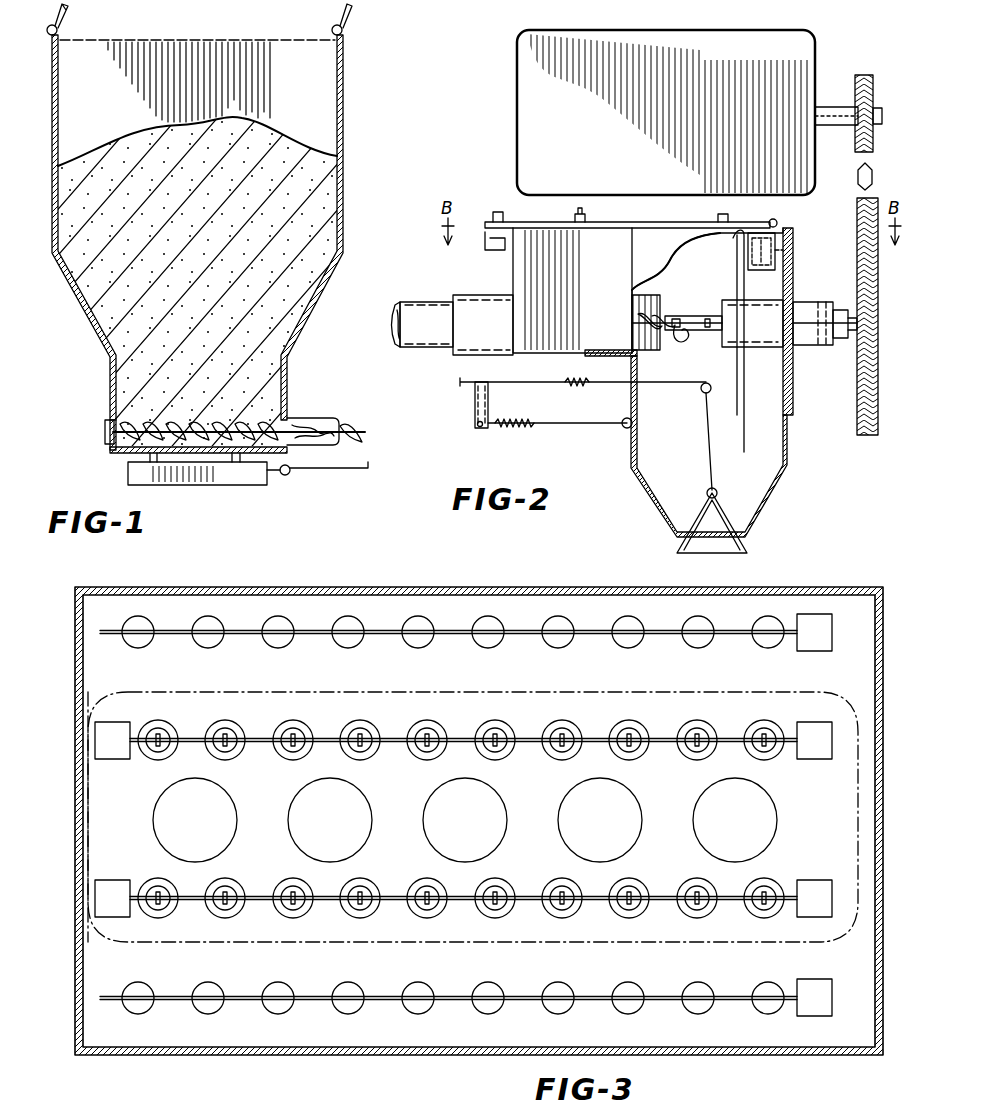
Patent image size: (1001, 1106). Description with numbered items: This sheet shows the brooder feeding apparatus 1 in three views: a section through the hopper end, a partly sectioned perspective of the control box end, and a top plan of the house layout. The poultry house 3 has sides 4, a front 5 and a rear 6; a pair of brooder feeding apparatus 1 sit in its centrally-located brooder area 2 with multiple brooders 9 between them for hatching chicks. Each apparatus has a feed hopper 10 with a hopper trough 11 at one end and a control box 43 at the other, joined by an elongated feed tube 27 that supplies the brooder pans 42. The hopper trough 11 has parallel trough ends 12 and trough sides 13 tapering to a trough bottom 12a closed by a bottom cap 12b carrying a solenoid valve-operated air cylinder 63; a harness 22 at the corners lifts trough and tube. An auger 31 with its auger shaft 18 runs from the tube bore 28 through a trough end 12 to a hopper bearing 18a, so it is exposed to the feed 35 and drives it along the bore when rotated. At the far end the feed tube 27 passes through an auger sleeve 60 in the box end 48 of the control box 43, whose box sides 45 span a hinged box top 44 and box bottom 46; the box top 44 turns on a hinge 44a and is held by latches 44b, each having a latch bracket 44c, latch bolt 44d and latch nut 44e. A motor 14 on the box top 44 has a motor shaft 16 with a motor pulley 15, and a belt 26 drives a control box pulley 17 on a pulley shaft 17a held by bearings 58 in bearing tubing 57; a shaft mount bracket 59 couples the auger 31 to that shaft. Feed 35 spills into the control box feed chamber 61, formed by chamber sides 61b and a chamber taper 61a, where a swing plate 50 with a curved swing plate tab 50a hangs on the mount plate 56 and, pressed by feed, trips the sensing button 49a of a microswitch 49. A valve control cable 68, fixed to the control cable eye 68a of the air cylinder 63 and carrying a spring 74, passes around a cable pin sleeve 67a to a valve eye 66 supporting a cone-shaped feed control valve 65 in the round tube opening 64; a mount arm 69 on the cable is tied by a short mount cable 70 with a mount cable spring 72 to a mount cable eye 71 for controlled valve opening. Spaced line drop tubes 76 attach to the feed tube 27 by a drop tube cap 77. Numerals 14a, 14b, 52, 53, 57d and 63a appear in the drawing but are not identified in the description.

In FIG. 3, the brooder feeding apparatus 1 is at (540, 712).
In FIG. 3, the brooder area 2 is at (413, 686).
In FIG. 3, the poultry house 3 is at (450, 578).
In FIG. 3, the sides 4 is at (354, 586).
In FIG. 3, the front 5 is at (874, 956).
In FIG. 3, the rear 6 is at (86, 954).
In FIG. 3, the brooders 9 is at (236, 820).
In FIG. 1, the feed hopper 10 is at (38, 176).
In FIG. 1, the hopper trough 11 is at (358, 168).
In FIG. 3, the hopper trough 11 is at (809, 710).
In FIG. 1, the trough ends 12 is at (54, 72).
In FIG. 1, the trough bottom 12a is at (110, 420).
In FIG. 1, the bottom cap 12b is at (112, 452).
In FIG. 1, the trough sides 13 is at (120, 95).
In FIG. 2, the motor 14 is at (656, 108).
In FIG. 2, the tank bottom 14a is at (712, 218).
In FIG. 2, the tank outlet 14b is at (700, 200).
In FIG. 2, the motor pulley 15 is at (870, 78).
In FIG. 2, the motor shaft 16 is at (832, 110).
In FIG. 2, the control box pulley 17 is at (857, 392).
In FIG. 2, the pulley shaft 17a is at (712, 316).
In FIG. 1, the auger shaft 18 is at (358, 436).
In FIG. 1, the hopper bearing 18a is at (105, 435).
In FIG. 1, the harness 22 is at (60, 10).
In FIG. 2, the belt 26 is at (858, 176).
In FIG. 1, the feed tube 27 is at (293, 414).
In FIG. 2, the feed tube 27 is at (389, 333).
In FIG. 3, the feed tube 27 is at (658, 722).
In FIG. 2, the tube bore 28 is at (388, 323).
In FIG. 1, the auger 31 is at (140, 406).
In FIG. 2, the auger 31 is at (650, 308).
In FIG. 1, the feed 35 is at (98, 282).
In FIG. 3, the brooder pans 42 is at (432, 732).
In FIG. 2, the control box 43 is at (508, 123).
In FIG. 3, the control box 43 is at (115, 871).
In FIG. 2, the box top 44 is at (540, 222).
In FIG. 2, the hinge 44a is at (777, 222).
In FIG. 2, the latches 44b is at (482, 240).
In FIG. 2, the latch bracket 44c is at (504, 250).
In FIG. 2, the latch bolt 44d is at (490, 212).
In FIG. 2, the latch nut 44e is at (500, 212).
In FIG. 2, the box sides 45 is at (582, 268).
In FIG. 2, the box bottom 46 is at (636, 360).
In FIG. 2, the box end 48 is at (514, 284).
In FIG. 2, the microswitch 49 is at (793, 292).
In FIG. 2, the sensing button 49a is at (742, 238).
In FIG. 2, the swing plate 50 is at (766, 437).
In FIG. 2, the swing plate tab 50a is at (700, 230).
In FIG. 3, the conveyor roller shaft 52 is at (448, 815).
In FIG. 3, the conveyor rollers 53 is at (328, 644).
In FIG. 2, the mount plate 56 is at (716, 380).
In FIG. 2, the bearing tubing 57 is at (776, 335).
In FIG. 2, the bearing mount 57d is at (783, 262).
In FIG. 2, the bearings 58 is at (730, 336).
In FIG. 2, the shaft mount bracket 59 is at (680, 340).
In FIG. 2, the auger sleeve 60 is at (496, 335).
In FIG. 2, the control box feed chamber 61 is at (624, 447).
In FIG. 2, the chamber taper 61a is at (640, 480).
In FIG. 2, the chamber sides 61b is at (762, 441).
In FIG. 1, the air cylinder 63 is at (260, 480).
In FIG. 1, the motor grille 63a is at (258, 470).
In FIG. 2, the round tube opening 64 is at (678, 540).
In FIG. 2, the cone-shaped feed control valve 65 is at (742, 543).
In FIG. 2, the valve eye 66 is at (706, 494).
In FIG. 2, the cable pin sleeve 67a is at (708, 400).
In FIG. 1, the valve control cable 68 is at (358, 470).
In FIG. 2, the valve control cable 68 is at (510, 388).
In FIG. 1, the control cable eye 68a is at (290, 472).
In FIG. 2, the mount arm 69 is at (475, 400).
In FIG. 2, the mount cable 70 is at (556, 424).
In FIG. 2, the mount cable eye 71 is at (624, 420).
In FIG. 2, the mount cable spring 72 is at (510, 426).
In FIG. 2, the spring 74 is at (568, 388).
In FIG. 3, the line drop tubes 76 is at (632, 724).
In FIG. 3, the drop tube cap 77 is at (372, 732).